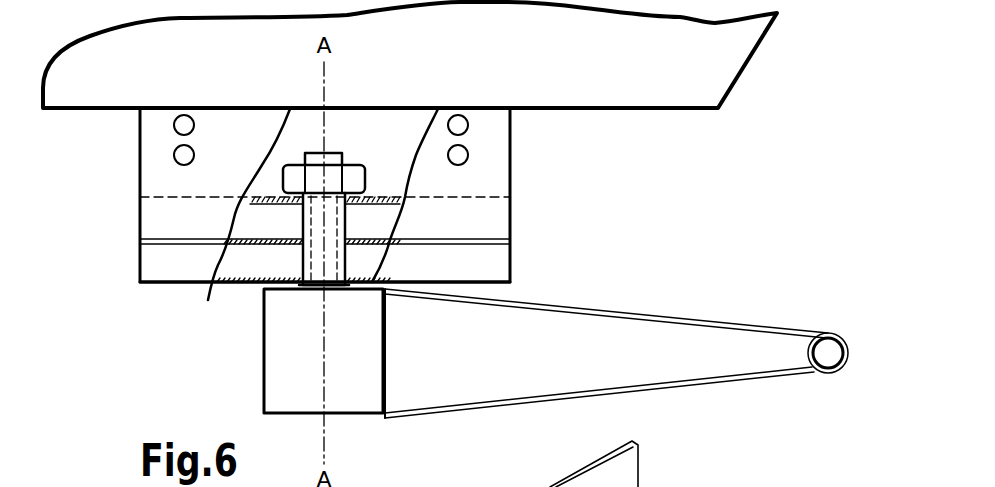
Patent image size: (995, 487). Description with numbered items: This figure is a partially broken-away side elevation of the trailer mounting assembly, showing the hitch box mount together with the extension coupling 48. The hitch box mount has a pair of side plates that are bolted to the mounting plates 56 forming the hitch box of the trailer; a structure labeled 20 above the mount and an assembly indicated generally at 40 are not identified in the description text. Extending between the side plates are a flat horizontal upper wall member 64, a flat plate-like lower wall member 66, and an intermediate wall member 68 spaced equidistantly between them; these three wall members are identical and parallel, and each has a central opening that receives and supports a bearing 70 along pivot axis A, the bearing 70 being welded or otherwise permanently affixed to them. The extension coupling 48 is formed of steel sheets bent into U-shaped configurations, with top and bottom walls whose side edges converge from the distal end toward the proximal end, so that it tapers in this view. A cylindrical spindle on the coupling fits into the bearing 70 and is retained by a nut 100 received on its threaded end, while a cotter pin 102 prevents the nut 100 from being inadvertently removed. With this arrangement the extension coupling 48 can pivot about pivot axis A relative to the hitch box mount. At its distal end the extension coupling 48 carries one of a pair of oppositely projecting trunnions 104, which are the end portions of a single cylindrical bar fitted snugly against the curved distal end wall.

The body 20 is at (518, 54).
The mounting assembly 40 is at (676, 221).
The extension coupling 48 is at (617, 352).
The mounting plates 56 is at (393, 155).
The upper wall member 64 is at (390, 203).
The lower wall member 66 is at (217, 287).
The intermediate wall member 68 is at (250, 247).
The bearing 70 is at (325, 253).
The nut 100 is at (353, 182).
The cotter pin 102 is at (295, 165).
The trunnion 104 is at (829, 358).